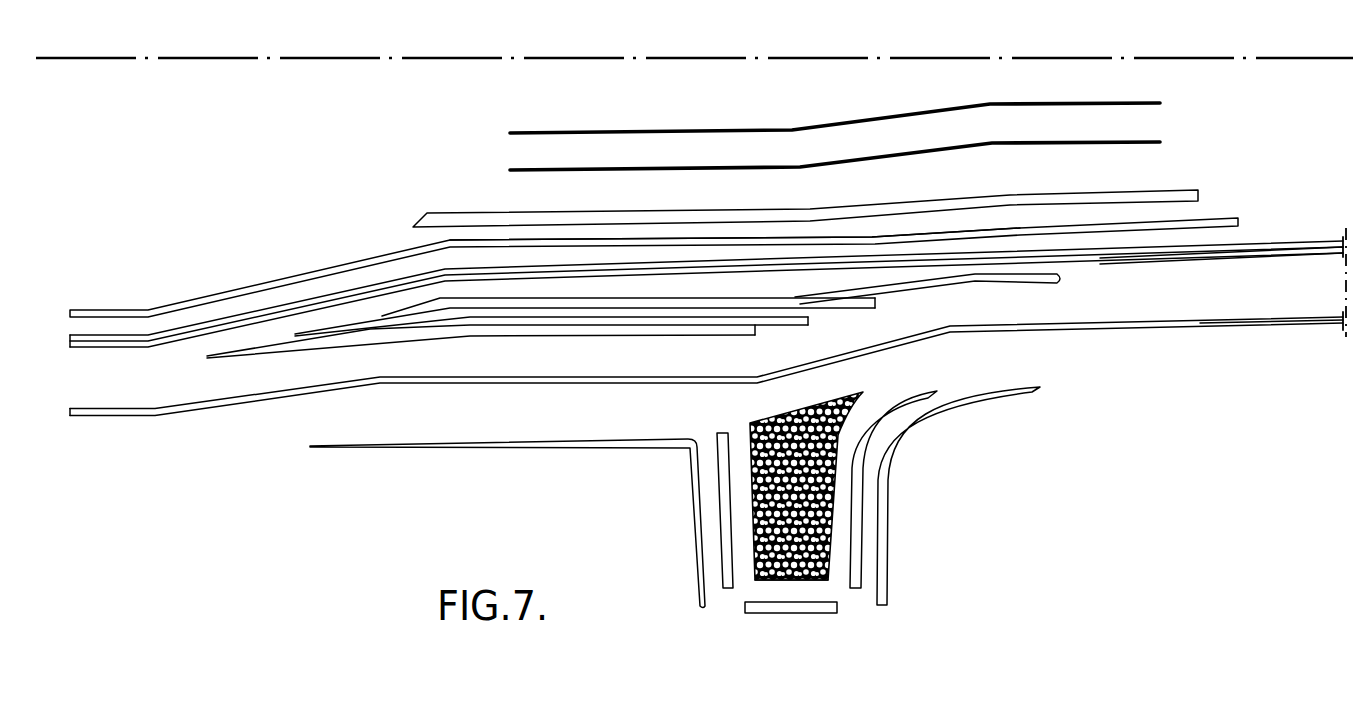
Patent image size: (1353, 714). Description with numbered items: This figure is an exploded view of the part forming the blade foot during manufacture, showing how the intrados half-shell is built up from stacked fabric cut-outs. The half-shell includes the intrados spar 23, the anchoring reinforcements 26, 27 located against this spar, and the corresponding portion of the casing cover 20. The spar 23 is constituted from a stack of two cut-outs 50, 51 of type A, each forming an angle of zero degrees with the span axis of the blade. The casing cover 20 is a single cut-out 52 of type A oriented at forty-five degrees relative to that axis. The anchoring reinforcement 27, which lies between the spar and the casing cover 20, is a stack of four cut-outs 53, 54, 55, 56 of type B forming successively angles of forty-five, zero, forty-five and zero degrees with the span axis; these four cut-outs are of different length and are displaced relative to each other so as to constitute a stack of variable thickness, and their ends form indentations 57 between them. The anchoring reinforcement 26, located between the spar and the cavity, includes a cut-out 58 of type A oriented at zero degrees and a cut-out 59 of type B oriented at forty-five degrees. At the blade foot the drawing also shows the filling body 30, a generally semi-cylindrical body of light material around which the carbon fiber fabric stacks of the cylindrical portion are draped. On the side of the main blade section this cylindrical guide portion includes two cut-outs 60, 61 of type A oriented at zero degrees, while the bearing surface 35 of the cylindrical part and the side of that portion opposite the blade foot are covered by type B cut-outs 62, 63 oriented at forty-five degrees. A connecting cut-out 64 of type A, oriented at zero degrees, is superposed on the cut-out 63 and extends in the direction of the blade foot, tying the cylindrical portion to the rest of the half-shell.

The casing cover 20 is at (1155, 328).
The intrados spar 23 is at (1270, 247).
The anchoring reinforcement 26 is at (1223, 218).
The anchoring reinforcement 27 is at (876, 305).
The filling body 30 is at (750, 457).
The bearing surface 35 is at (775, 582).
The cut-out 50 is at (1168, 253).
The cut-out 51 is at (1227, 257).
The cut-out 52 is at (1287, 320).
The cut-out 53 is at (527, 332).
The cut-out 54 is at (577, 322).
The cut-out 55 is at (637, 314).
The cut-out 56 is at (693, 302).
The indentation 57 is at (380, 317).
The cut-out 58 is at (887, 235).
The cut-out 59 is at (752, 213).
The cut-out 60 is at (868, 453).
The cut-out 61 is at (862, 492).
The cut-out 62 is at (817, 607).
The cut-out 63 is at (725, 525).
The connecting cut-out 64 is at (553, 442).